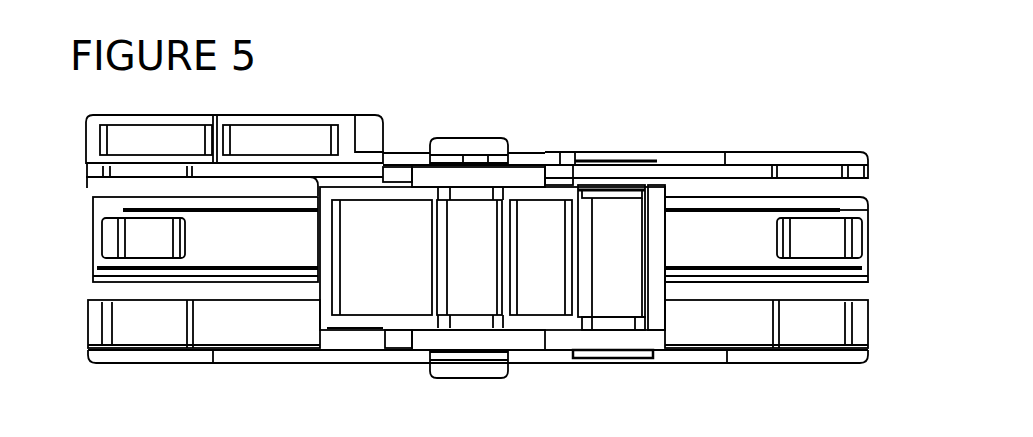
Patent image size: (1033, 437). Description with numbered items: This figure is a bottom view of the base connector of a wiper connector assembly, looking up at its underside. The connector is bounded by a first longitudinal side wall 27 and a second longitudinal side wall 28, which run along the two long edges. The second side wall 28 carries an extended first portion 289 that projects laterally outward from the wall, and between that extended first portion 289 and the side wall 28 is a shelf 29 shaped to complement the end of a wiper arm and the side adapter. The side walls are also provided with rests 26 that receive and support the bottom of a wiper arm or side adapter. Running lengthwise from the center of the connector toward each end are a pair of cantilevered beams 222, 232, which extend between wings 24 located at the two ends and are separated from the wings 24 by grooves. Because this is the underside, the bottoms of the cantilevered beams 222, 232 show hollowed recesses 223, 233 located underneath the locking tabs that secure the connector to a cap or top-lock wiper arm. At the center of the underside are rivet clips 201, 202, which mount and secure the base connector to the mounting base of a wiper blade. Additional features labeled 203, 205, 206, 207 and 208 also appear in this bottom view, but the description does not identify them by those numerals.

The wings 24 is at (86, 130).
The extended first portion 289 is at (237, 113).
The shelf 29 is at (382, 133).
The connector block 208 is at (382, 190).
The rests 26 is at (473, 147).
The rivet clip 202 is at (640, 310).
The second longitudinal side wall 28 is at (680, 152).
The hollowed recess 233 is at (820, 235).
The cantilevered beam 232 is at (735, 247).
The hollowed recess 223 is at (147, 235).
The cantilevered beam 222 is at (212, 250).
The left window 205 is at (349, 228).
The middle window 206 is at (505, 243).
The center frame 207 is at (425, 320).
The rivet clip 201 is at (470, 320).
The right strip 203 is at (505, 355).
The first longitudinal side wall 27 is at (750, 365).